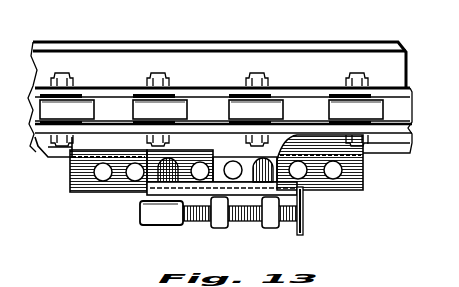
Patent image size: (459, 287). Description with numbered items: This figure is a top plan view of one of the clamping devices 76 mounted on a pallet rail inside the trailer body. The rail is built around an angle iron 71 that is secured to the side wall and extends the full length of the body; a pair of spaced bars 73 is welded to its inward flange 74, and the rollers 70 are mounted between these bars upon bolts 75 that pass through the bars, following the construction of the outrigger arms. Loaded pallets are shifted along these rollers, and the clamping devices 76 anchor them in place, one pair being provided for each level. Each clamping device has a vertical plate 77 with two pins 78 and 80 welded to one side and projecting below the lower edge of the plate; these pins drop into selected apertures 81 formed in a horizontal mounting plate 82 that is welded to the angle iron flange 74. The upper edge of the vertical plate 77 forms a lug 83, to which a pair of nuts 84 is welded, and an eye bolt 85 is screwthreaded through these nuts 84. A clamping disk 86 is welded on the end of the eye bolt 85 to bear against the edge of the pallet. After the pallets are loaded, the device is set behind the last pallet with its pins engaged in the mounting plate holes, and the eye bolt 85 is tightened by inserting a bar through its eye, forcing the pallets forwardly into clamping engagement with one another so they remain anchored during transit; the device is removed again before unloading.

The roller 70 is at (84, 108).
The angle iron 71 is at (368, 46).
The spaced bars 73 is at (124, 92).
The inward flange 74 is at (399, 72).
The bolt 75 is at (60, 148).
The clamping device 76 is at (305, 230).
The vertical plate 77 is at (214, 178).
The pin 78 is at (289, 145).
The pin 80 is at (170, 160).
The aperture 81 is at (135, 172).
The horizontal mounting plate 82 is at (82, 180).
The lug 83 is at (246, 212).
The nut 84 is at (219, 221).
The eye bolt 85 is at (170, 217).
The clamping disk 86 is at (305, 215).